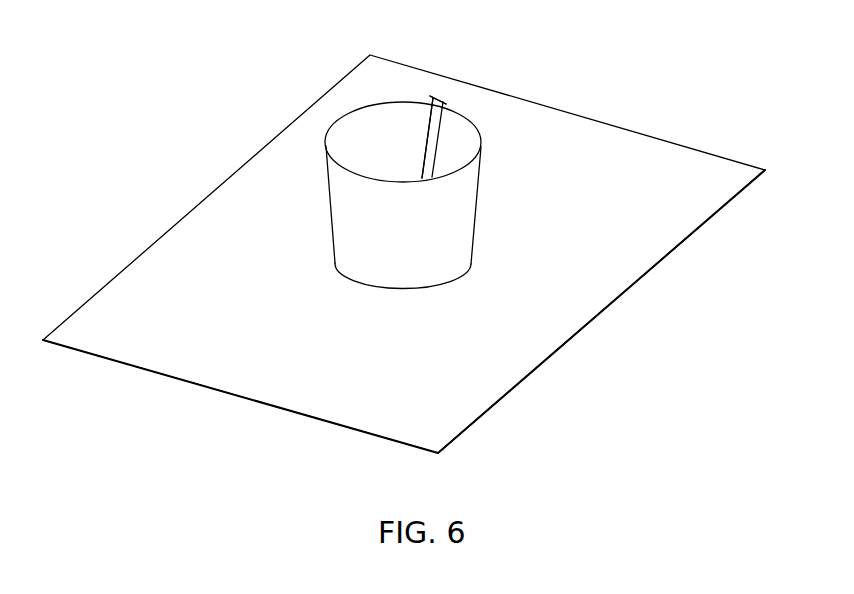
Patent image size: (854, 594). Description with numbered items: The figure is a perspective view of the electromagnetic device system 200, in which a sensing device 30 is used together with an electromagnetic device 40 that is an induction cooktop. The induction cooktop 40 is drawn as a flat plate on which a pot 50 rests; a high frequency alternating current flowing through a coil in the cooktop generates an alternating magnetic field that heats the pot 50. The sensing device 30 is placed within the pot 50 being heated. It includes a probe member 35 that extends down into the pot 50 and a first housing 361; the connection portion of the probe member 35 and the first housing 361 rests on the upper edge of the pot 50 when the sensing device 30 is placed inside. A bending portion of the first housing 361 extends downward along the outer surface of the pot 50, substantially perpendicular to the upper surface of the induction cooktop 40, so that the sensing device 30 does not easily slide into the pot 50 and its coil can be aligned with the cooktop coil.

The electromagnetic device system 200 is at (740, 38).
The electromagnetic device 40 is at (664, 142).
The pot 50 is at (478, 193).
The sensing device 30 is at (436, 82).
The first housing 361 is at (474, 84).
The probe member 35 is at (430, 149).